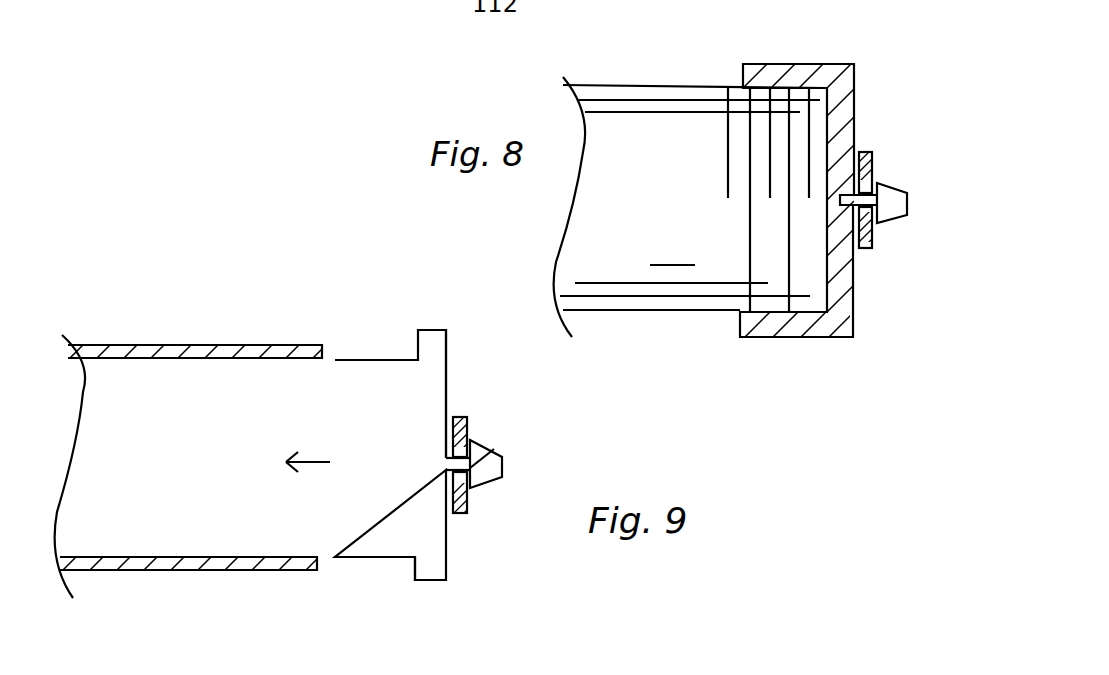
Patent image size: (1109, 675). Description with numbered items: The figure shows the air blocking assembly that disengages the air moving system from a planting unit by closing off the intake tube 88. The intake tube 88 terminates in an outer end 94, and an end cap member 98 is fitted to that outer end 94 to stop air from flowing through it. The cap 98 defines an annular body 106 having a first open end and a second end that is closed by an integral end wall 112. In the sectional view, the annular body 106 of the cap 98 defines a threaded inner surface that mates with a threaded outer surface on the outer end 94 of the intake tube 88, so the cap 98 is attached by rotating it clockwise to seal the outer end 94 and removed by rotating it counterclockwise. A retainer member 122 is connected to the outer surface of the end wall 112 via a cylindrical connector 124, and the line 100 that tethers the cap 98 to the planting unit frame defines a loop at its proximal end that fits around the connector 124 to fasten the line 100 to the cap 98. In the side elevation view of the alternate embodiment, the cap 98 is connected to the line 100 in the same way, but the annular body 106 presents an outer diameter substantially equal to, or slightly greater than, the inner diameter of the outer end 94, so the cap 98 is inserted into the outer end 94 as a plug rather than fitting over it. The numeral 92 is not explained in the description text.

In FIG. 8, the intake tube 88 is at (628, 312).
In FIG. 9, the intake tube 88 is at (129, 568).
In FIG. 8, the side wall panel 92 is at (637, 86).
In FIG. 9, the side wall panel 92 is at (132, 345).
In FIG. 8, the outer end 94 is at (767, 88).
In FIG. 9, the outer end 94 is at (257, 572).
In FIG. 8, the end cap member 98 is at (838, 171).
In FIG. 9, the end cap member 98 is at (422, 457).
In FIG. 8, the line 100 is at (896, 223).
In FIG. 9, the line 100 is at (489, 459).
In FIG. 8, the annular body 106 is at (807, 64).
In FIG. 9, the annular body 106 is at (368, 557).
In FIG. 8, the end wall 112 is at (858, 79).
In FIG. 9, the end wall 112 is at (447, 385).
In FIG. 8, the retainer member 122 is at (880, 215).
In FIG. 9, the retainer member 122 is at (503, 465).
In FIG. 8, the cylindrical connector 124 is at (873, 232).
In FIG. 9, the cylindrical connector 124 is at (463, 498).